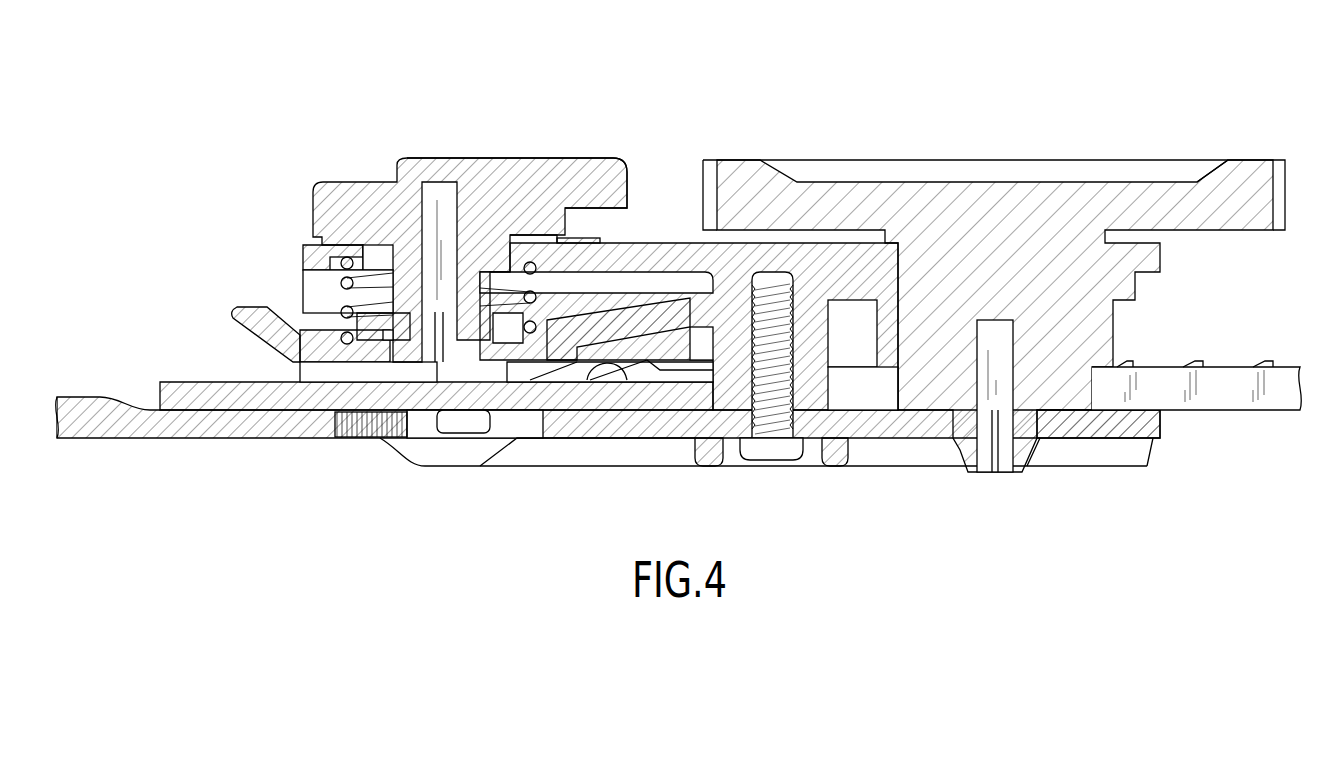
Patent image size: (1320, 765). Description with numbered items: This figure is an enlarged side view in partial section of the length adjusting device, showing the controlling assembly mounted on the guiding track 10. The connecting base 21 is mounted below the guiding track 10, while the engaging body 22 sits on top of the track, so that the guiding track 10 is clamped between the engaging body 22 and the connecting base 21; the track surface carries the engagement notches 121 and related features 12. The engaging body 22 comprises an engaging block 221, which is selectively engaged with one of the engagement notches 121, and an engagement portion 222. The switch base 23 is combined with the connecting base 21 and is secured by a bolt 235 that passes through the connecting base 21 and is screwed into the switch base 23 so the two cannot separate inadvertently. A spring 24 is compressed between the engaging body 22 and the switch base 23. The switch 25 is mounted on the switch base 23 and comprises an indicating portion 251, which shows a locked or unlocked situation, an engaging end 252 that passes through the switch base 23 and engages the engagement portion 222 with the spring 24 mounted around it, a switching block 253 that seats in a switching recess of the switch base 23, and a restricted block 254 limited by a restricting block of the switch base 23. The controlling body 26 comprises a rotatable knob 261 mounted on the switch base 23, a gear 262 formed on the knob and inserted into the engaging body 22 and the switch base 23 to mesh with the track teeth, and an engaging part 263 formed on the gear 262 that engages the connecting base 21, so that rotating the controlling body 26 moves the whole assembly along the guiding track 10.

The guiding track 10 is at (1196, 393).
The protrusions 12 is at (1254, 357).
The connecting base 21 is at (1158, 453).
The engaging body 22 is at (436, 405).
The engaging block 221 is at (470, 345).
The engagement portion 222 is at (390, 347).
The switch base 23 is at (689, 323).
The bolt 235 is at (760, 428).
The spring 24 is at (345, 310).
The switch 25 is at (437, 284).
The indicating portion 251 is at (568, 158).
The engaging end 252 is at (463, 343).
The switching block 253 is at (335, 230).
The restricted block 254 is at (493, 265).
The controlling body 26 is at (1007, 296).
The rotatable knob 261 is at (1237, 172).
The gear 262 is at (1092, 393).
The engaging part 263 is at (960, 452).
The engagement notches 121 is at (587, 382).